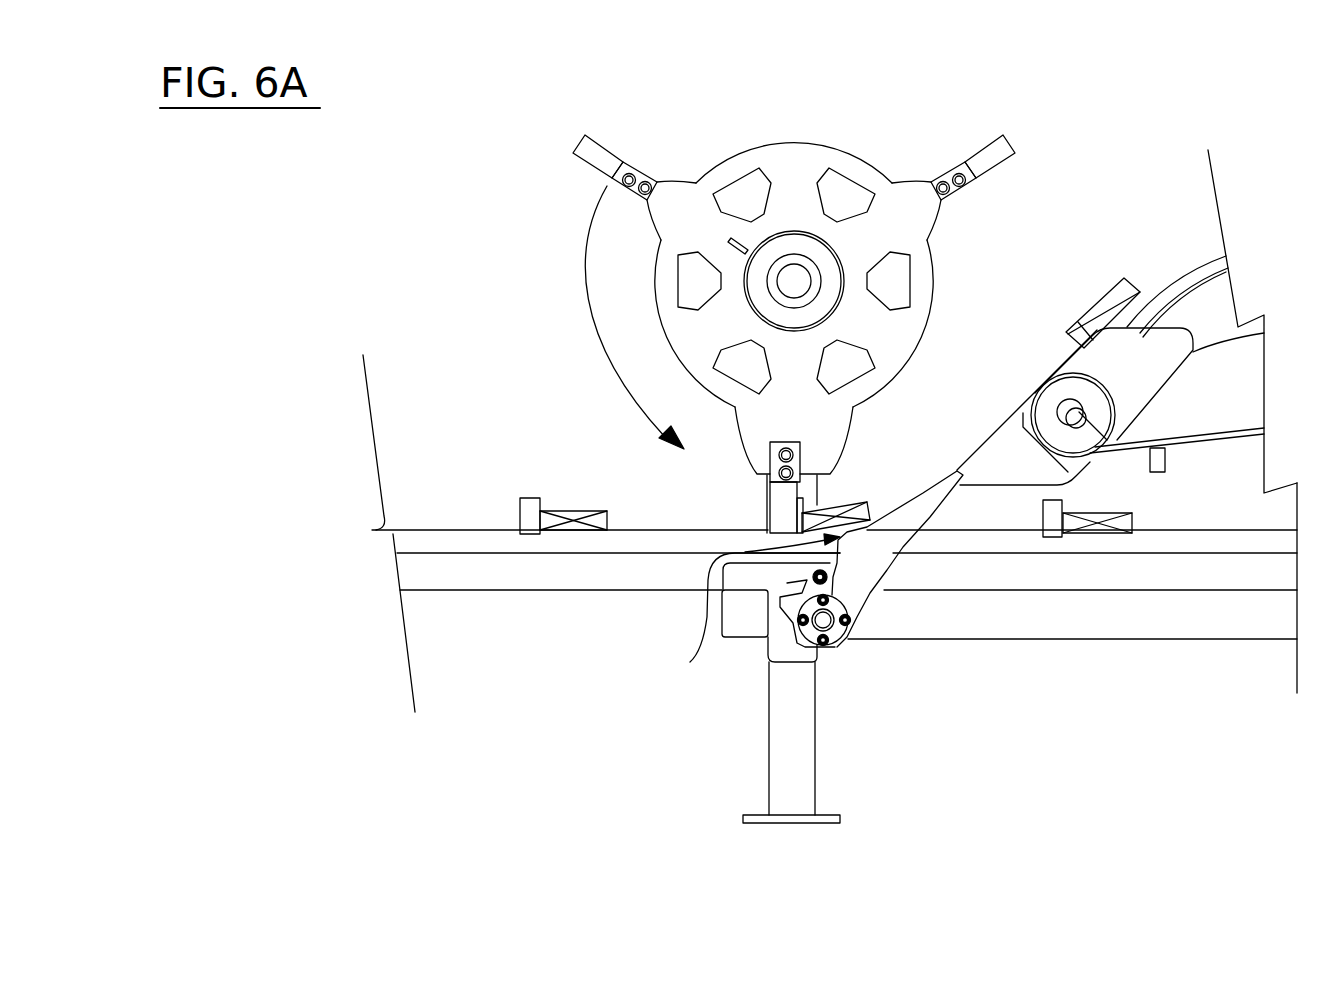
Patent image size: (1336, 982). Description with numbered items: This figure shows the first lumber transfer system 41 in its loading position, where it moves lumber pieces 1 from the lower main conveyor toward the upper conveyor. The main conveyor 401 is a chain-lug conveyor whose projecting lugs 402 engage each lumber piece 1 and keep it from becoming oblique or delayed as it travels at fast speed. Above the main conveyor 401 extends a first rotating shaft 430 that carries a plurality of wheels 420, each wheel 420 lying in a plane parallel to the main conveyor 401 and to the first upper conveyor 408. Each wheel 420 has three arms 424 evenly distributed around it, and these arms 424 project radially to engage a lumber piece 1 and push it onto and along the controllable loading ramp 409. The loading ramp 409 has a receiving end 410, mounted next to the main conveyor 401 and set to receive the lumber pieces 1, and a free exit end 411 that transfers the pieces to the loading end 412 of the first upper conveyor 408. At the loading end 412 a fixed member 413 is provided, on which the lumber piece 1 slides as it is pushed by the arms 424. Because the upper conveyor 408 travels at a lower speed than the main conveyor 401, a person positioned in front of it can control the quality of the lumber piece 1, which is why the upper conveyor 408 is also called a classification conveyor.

The first lumber transfer system 41 is at (540, 103).
The wheel 420 is at (792, 168).
The first rotating shaft 430 is at (794, 281).
The arm 424 is at (595, 153).
The lug 402 is at (522, 498).
The lumber piece 1 is at (567, 512).
The main conveyor 401 is at (468, 577).
The receiving end 410 is at (698, 655).
The loading ramp 409 is at (865, 567).
The exit end 411 is at (948, 463).
The loading end 412 is at (1032, 372).
The fixed member 413 is at (1003, 447).
The first upper conveyor 408 is at (1207, 303).